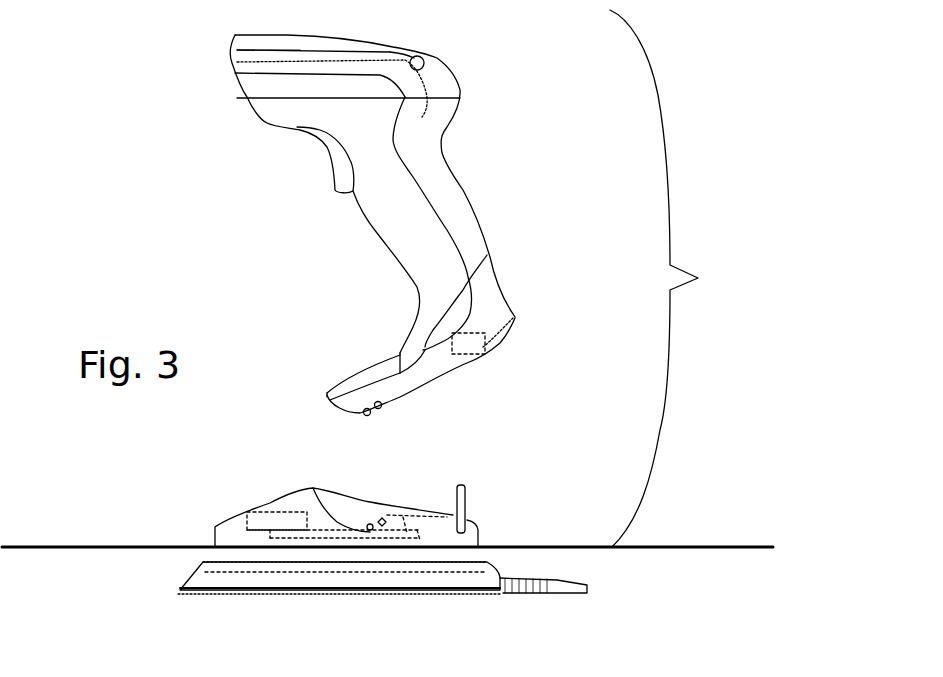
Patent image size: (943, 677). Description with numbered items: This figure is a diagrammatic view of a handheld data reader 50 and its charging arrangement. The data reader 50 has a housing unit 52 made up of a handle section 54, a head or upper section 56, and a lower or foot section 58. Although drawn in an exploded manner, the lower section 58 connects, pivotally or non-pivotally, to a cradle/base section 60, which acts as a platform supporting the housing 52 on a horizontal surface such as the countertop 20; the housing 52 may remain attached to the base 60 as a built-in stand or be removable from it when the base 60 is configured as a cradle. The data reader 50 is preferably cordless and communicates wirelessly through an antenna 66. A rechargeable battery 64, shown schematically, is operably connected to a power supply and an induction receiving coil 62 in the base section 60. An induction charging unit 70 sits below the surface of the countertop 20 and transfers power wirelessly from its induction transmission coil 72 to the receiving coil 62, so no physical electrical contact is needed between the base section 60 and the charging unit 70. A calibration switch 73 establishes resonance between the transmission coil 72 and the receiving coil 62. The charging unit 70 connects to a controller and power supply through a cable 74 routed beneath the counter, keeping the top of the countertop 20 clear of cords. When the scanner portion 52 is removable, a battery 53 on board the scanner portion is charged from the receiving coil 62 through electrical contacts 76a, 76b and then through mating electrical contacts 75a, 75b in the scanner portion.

The countertop 20 is at (678, 546).
The data reader 50 is at (675, 278).
The housing unit 52 is at (462, 190).
The battery 53 is at (485, 347).
The handle section 54 is at (395, 228).
The head or upper section 56 is at (300, 65).
The lower or foot section 58 is at (327, 398).
The cradle/base section 60 is at (307, 498).
The induction receiving coil 62 is at (403, 507).
The battery 64 is at (263, 520).
The antenna 66 is at (468, 508).
The induction charging unit 70 is at (220, 580).
The induction transmission coil 72 is at (337, 572).
The calibration switch 73 is at (420, 57).
The cable 74 is at (517, 594).
The electrical contact 75a is at (382, 405).
The electrical contact 75b is at (371, 413).
The electrical contact 76a is at (370, 523).
The electrical contact 76b is at (382, 517).